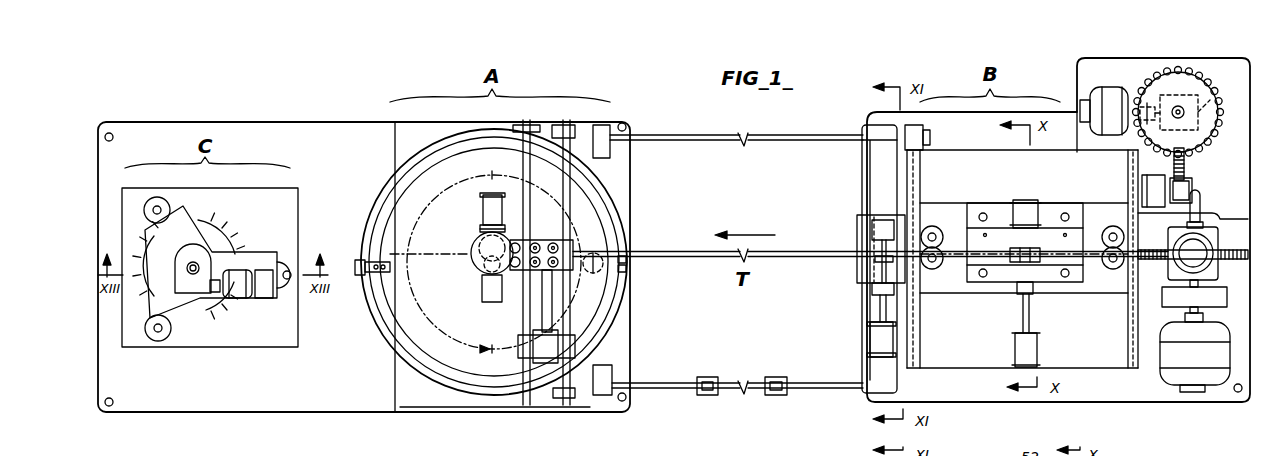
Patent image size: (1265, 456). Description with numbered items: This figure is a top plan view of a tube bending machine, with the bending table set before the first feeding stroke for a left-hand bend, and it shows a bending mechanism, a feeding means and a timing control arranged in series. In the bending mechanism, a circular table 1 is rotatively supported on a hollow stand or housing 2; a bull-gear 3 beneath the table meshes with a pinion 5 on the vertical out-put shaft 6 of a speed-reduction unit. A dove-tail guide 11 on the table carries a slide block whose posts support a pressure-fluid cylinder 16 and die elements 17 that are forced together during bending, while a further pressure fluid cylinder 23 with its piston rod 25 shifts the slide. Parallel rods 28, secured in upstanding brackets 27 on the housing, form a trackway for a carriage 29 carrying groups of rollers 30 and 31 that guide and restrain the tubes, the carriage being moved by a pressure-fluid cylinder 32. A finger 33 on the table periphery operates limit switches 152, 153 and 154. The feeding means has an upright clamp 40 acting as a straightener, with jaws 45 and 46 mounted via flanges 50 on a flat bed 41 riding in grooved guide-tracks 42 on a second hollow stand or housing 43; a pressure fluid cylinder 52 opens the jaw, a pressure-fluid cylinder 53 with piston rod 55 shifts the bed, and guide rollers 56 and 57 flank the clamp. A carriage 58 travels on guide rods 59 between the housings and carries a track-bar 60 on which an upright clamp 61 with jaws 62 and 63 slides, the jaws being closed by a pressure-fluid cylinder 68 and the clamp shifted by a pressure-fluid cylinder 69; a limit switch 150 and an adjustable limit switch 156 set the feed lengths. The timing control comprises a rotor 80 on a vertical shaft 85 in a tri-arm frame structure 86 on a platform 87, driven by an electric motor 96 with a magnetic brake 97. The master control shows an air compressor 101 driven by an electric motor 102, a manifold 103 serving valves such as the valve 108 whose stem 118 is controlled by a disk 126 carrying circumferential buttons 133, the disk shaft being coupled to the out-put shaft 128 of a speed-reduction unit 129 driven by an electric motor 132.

The circular table 1 is at (392, 207).
The hollow stand or housing 2 is at (398, 373).
The bull-gear 3 is at (556, 338).
The pinion 5 is at (590, 274).
The vertical out-put shaft 6 is at (597, 282).
The dove-tail guide 11 is at (482, 296).
The pressure-fluid cylinder 16 is at (471, 256).
The die elements 17 is at (478, 266).
The pressure fluid cylinder 23 is at (483, 208).
The piston rod 25 is at (480, 230).
The upstanding brackets 27 is at (540, 124).
The parallel rods 28 is at (530, 180).
The carriage 29 is at (573, 242).
The rollers 30 is at (540, 243).
The rollers 31 is at (530, 270).
The pressure-fluid cylinder 32 is at (530, 340).
The finger 33 is at (358, 274).
The upright clamp 40 is at (1018, 290).
The flat bed 41 is at (965, 296).
The grooved guide-tracks 42 is at (922, 336).
The hollow stand or housing 43 is at (960, 370).
The jaw 45 is at (1062, 210).
The jaw 46 is at (1055, 284).
The flanges 50 is at (984, 212).
The pressure fluid cylinder 52 is at (1026, 198).
The pressure-fluid cylinder 53 is at (1037, 347).
The piston rod 55 is at (1030, 315).
The guide rollers 56 is at (940, 232).
The guide rollers 57 is at (1113, 226).
The carriage 58 is at (856, 158).
The guide rods 59 is at (742, 378).
The track-bar 60 is at (892, 162).
The upright clamp 61 is at (866, 288).
The jaw 62 is at (858, 240).
The jaw 63 is at (858, 262).
The pressure-fluid cylinder 68 is at (875, 213).
The pressure-fluid cylinder 69 is at (872, 338).
The rotor 80 is at (226, 221).
The vertical shaft 85 is at (190, 262).
The tri-arm frame structure 86 is at (262, 256).
The platform 87 is at (280, 406).
The electric motor 96 is at (238, 298).
The magnetic brake 97 is at (266, 298).
The fluid or air compressor 101 is at (1172, 232).
The electric motor 102 is at (1195, 336).
The manifold 103 is at (1215, 214).
The valve 108 is at (1201, 196).
The stem 118 is at (1193, 184).
The disk 126 is at (1214, 118).
The out-put shaft 128 is at (1178, 105).
The speed-reduction unit 129 is at (1210, 92).
The electric motor 132 is at (1112, 95).
The circumferential buttons 133 is at (1190, 156).
The limit switch 150 is at (778, 377).
The limit switch 152 is at (626, 271).
The limit switch 153 is at (627, 260).
The limit switch 154 is at (356, 262).
The limit switch 156 is at (708, 396).